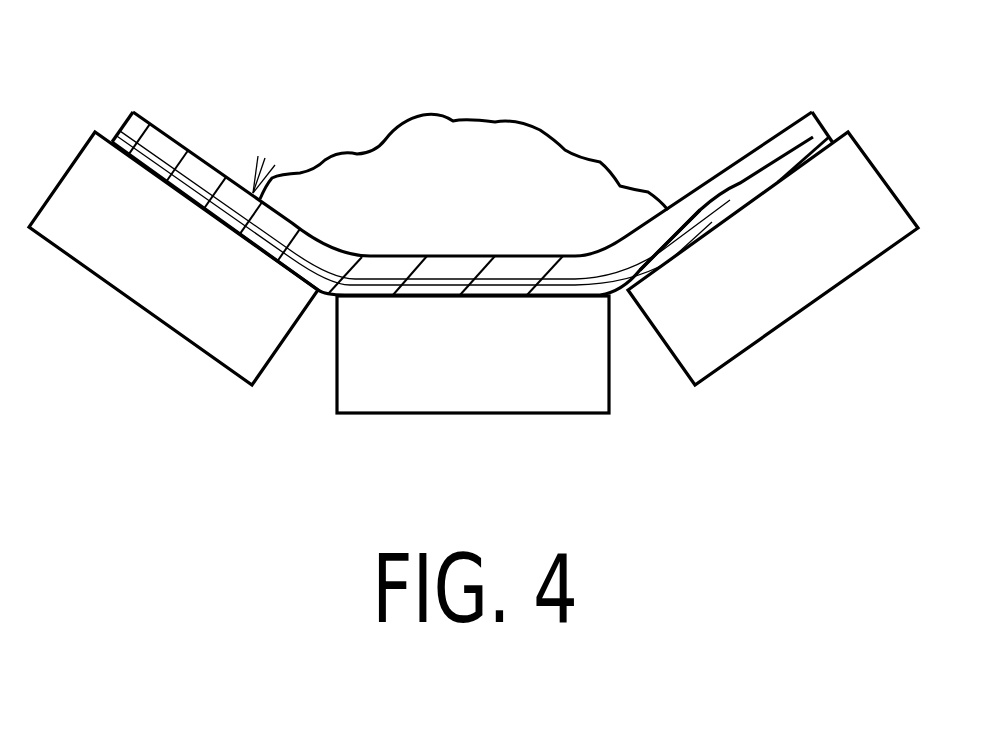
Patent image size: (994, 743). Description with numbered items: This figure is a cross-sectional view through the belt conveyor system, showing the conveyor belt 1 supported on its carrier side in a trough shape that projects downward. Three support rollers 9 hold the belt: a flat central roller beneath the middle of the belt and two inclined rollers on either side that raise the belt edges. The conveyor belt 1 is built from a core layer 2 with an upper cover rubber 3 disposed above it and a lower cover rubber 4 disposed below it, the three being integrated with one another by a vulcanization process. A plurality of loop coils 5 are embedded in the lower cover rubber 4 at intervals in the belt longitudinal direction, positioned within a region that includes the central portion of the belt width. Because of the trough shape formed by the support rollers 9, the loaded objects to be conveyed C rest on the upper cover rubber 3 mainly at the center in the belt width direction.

The conveyor belt 1 is at (262, 172).
The core layer 2 is at (172, 143).
The upper cover rubber 3 is at (720, 187).
The lower cover rubber 4 is at (435, 296).
The loop coils 5 is at (223, 213).
The support rollers 9 is at (107, 272).
The objects to be conveyed C is at (450, 128).